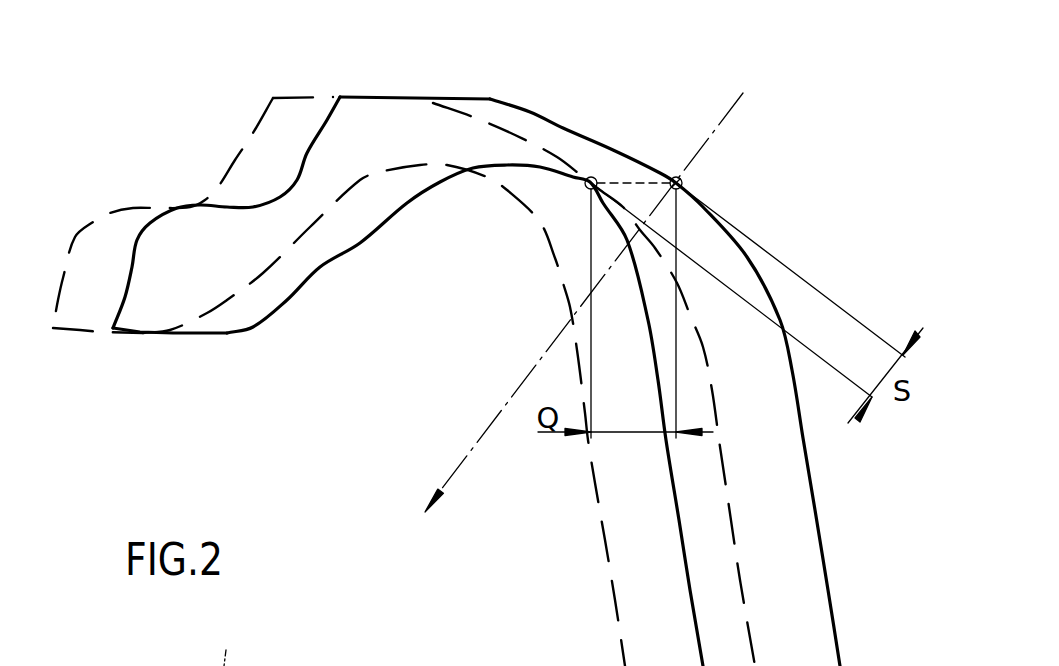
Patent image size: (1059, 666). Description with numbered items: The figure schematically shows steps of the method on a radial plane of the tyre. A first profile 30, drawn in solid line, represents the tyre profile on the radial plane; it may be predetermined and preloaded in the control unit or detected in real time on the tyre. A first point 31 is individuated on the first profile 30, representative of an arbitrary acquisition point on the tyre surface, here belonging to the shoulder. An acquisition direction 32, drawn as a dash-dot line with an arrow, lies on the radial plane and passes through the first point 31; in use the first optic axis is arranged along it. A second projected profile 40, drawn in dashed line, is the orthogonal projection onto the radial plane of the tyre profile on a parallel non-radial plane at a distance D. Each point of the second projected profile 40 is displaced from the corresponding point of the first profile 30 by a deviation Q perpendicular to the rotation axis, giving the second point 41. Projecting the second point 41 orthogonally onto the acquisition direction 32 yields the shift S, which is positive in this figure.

The first profile 30 is at (377, 97).
The second projected profile 40 is at (407, 165).
The first point 31 is at (682, 181).
The acquisition direction 32 is at (708, 140).
The second point 41 is at (580, 182).